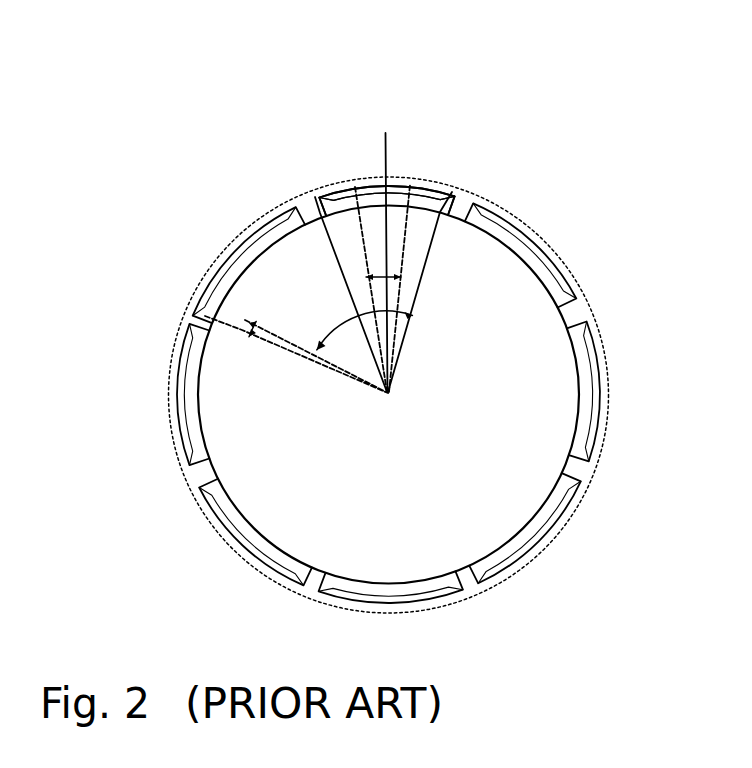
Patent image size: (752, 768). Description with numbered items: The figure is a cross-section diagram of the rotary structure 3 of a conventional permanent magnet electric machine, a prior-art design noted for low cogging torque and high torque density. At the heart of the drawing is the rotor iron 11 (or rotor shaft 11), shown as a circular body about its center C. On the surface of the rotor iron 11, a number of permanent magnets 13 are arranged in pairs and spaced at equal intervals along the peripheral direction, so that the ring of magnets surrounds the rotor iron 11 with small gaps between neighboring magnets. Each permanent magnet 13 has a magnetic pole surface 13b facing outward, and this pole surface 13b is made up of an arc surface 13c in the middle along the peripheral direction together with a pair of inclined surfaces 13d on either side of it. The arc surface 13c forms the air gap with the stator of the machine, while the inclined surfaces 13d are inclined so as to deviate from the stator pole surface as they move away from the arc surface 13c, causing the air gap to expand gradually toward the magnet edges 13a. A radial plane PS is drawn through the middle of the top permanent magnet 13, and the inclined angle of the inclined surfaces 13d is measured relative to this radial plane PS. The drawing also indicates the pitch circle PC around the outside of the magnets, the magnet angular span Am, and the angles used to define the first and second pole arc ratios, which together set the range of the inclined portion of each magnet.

The rotor 3 is at (598, 283).
The rotor iron 11 is at (493, 313).
The permanent magnet 13 is at (372, 194).
The side face of magnet 13a is at (316, 208).
The magnetic pole surface 13b is at (424, 169).
The arc surface 13c is at (393, 180).
The inclined surfaces 13d is at (322, 197).
The pitch circle PC is at (603, 333).
The radial plane PS is at (390, 150).
The rotation center C is at (392, 392).
The magnet angle Am is at (254, 318).